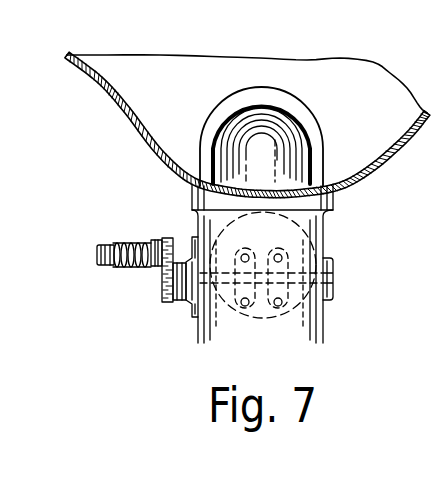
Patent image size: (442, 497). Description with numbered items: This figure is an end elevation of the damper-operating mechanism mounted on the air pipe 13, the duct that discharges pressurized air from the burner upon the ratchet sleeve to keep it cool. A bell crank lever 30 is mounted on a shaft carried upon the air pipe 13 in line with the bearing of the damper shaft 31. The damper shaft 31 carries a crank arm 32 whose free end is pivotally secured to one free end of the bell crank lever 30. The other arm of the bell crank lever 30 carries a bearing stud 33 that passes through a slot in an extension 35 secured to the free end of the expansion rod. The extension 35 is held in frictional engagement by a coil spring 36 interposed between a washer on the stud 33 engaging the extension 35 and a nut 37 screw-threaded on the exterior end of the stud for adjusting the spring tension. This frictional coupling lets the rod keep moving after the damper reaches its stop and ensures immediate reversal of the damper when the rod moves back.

The air pipe 13 is at (322, 317).
The bell crank lever 30 is at (173, 286).
The damper shaft 31 is at (200, 318).
The crank arm 32 is at (173, 302).
The bearing stud 33 is at (97, 253).
The extension 35 is at (155, 240).
The coil spring 36 is at (128, 242).
The nut 37 is at (111, 263).